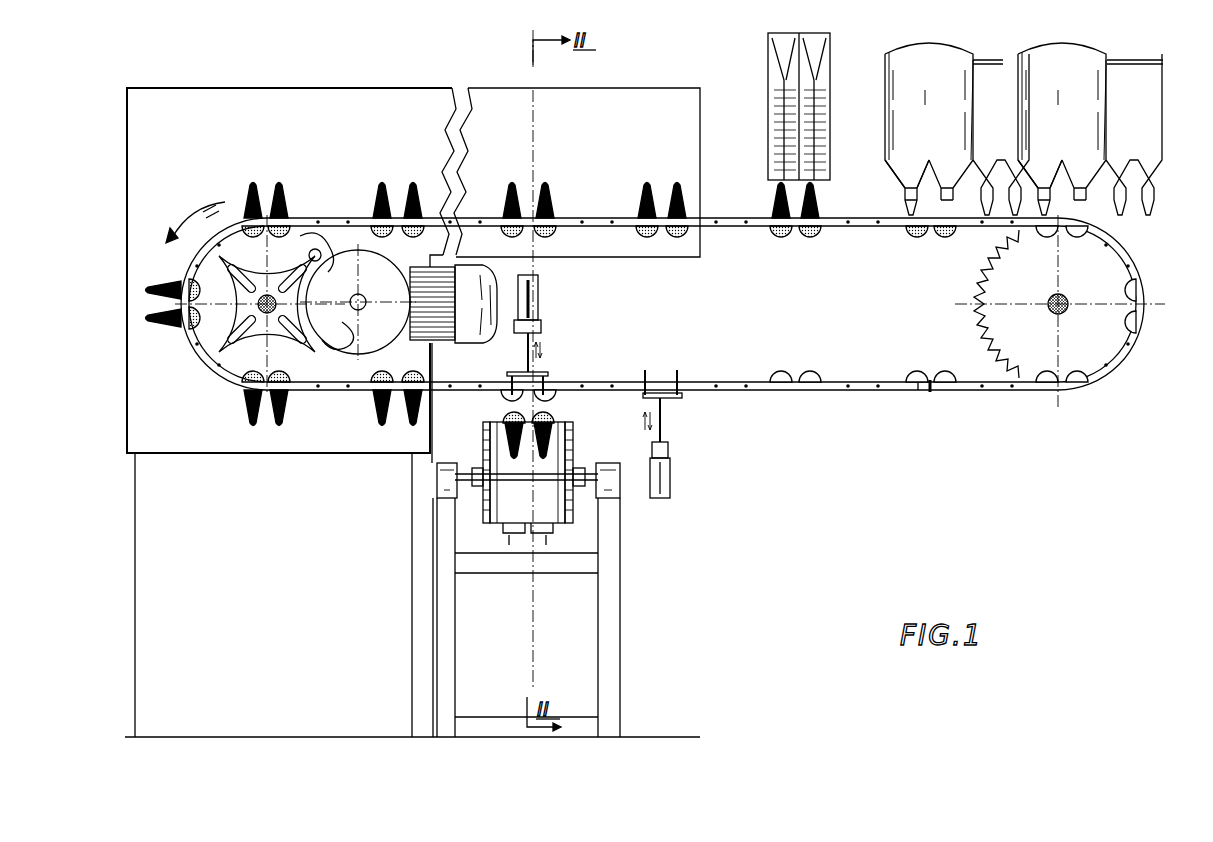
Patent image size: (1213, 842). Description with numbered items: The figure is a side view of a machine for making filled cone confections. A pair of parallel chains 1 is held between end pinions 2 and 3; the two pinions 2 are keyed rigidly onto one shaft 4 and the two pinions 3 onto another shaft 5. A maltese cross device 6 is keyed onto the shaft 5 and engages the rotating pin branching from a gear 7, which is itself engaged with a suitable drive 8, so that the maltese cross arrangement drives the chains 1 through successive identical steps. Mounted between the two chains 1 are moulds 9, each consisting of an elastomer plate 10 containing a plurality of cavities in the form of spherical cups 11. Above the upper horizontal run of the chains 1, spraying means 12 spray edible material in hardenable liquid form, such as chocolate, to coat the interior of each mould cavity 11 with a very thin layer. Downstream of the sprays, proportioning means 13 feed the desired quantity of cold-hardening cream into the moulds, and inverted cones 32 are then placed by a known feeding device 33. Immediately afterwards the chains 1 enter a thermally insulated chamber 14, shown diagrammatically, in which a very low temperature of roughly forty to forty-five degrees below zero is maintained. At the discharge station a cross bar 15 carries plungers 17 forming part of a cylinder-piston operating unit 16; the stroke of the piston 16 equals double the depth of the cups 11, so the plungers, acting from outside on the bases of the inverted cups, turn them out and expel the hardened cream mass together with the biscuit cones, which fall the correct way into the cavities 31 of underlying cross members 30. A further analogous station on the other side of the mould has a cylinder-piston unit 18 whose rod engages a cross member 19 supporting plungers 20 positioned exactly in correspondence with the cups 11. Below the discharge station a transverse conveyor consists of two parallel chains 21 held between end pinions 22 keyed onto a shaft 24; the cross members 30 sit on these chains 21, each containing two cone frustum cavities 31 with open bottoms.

The chains 1 is at (980, 392).
The end pinions 2 is at (1112, 333).
The end pinions 3 is at (240, 378).
The shaft 4 is at (1070, 300).
The shaft 5 is at (236, 252).
The maltese cross device 6 is at (290, 260).
The gear 7 is at (352, 262).
The drive 8 is at (468, 282).
The moulds 9 is at (920, 380).
The elastomer plate 10 is at (924, 388).
The spherical cups 11 is at (906, 392).
The spraying means 12 is at (1073, 116).
The proportioning means 13 is at (948, 75).
The thermally insulated chamber 14 is at (673, 102).
The cross bar 15 is at (542, 374).
The cylinder-piston operating unit 16 is at (538, 294).
The plungers 17 is at (548, 380).
The cylinder-piston unit 18 is at (670, 472).
The cross member 19 is at (684, 392).
The plungers 20 is at (682, 396).
The chains 21 is at (489, 424).
The end pinions 22 is at (486, 456).
The shaft 24 is at (590, 480).
The cross members 30 is at (557, 420).
The cone frustum cavities 31 is at (540, 535).
The inverted cones 32 is at (818, 212).
The cone feeding device 33 is at (826, 96).